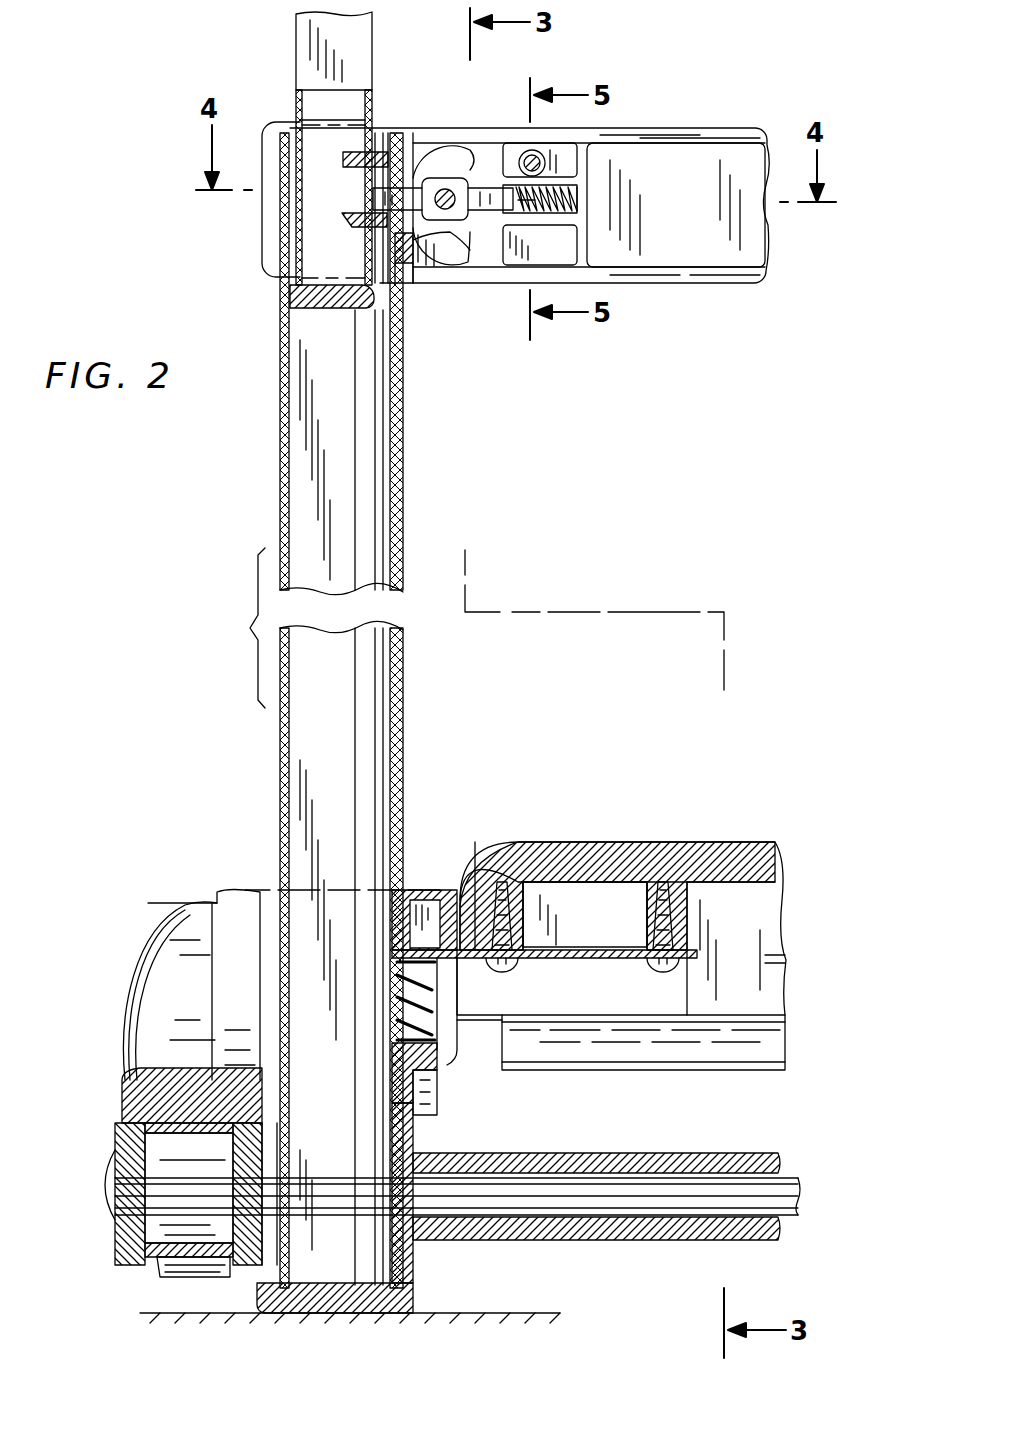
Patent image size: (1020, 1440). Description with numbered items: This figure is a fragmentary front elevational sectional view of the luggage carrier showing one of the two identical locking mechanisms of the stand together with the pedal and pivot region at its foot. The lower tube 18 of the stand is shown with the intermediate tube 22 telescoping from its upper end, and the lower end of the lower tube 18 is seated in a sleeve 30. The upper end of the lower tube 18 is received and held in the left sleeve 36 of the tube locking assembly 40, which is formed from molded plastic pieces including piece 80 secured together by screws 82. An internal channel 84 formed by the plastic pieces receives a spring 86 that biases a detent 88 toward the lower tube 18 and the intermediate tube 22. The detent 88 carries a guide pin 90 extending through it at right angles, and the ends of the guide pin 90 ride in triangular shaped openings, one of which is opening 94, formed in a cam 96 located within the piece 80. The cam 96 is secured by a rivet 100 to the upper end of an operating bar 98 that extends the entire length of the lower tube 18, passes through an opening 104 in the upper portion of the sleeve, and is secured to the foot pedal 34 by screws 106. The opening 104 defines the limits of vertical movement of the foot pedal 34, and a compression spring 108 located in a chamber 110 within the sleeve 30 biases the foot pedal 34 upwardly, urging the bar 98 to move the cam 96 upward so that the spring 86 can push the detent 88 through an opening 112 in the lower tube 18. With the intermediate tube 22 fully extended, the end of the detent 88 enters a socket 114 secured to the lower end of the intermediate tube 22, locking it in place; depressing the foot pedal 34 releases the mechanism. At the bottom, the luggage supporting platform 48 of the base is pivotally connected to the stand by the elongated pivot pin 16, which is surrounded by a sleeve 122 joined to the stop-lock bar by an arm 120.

The pivot pin 16 is at (792, 1178).
The left lower tube 18 is at (280, 785).
The intermediate tube 22 is at (296, 42).
The sleeve 30 is at (413, 1287).
The foot pedal 34 is at (708, 845).
The left sleeve 36 is at (262, 245).
The tube locking assembly 40 is at (700, 128).
The luggage supporting platform 48 is at (126, 1070).
The molded plastic piece 80 is at (703, 283).
The screws 82 is at (522, 150).
The internal channel 84 is at (577, 195).
The spring 86 is at (577, 207).
The detent 88 is at (520, 215).
The guide pin 90 is at (440, 190).
The triangular shaped opening 94 is at (462, 168).
The cam 96 is at (456, 245).
The operating bar 98 is at (403, 390).
The rivet 100 is at (410, 262).
The opening 104 is at (462, 975).
The screws 106 is at (655, 968).
The compression spring 108 is at (397, 1003).
The chamber 110 is at (450, 1045).
The opening 112 is at (370, 213).
The socket 114 is at (343, 160).
The arm 120 is at (437, 1110).
The sleeve 122 is at (645, 1240).